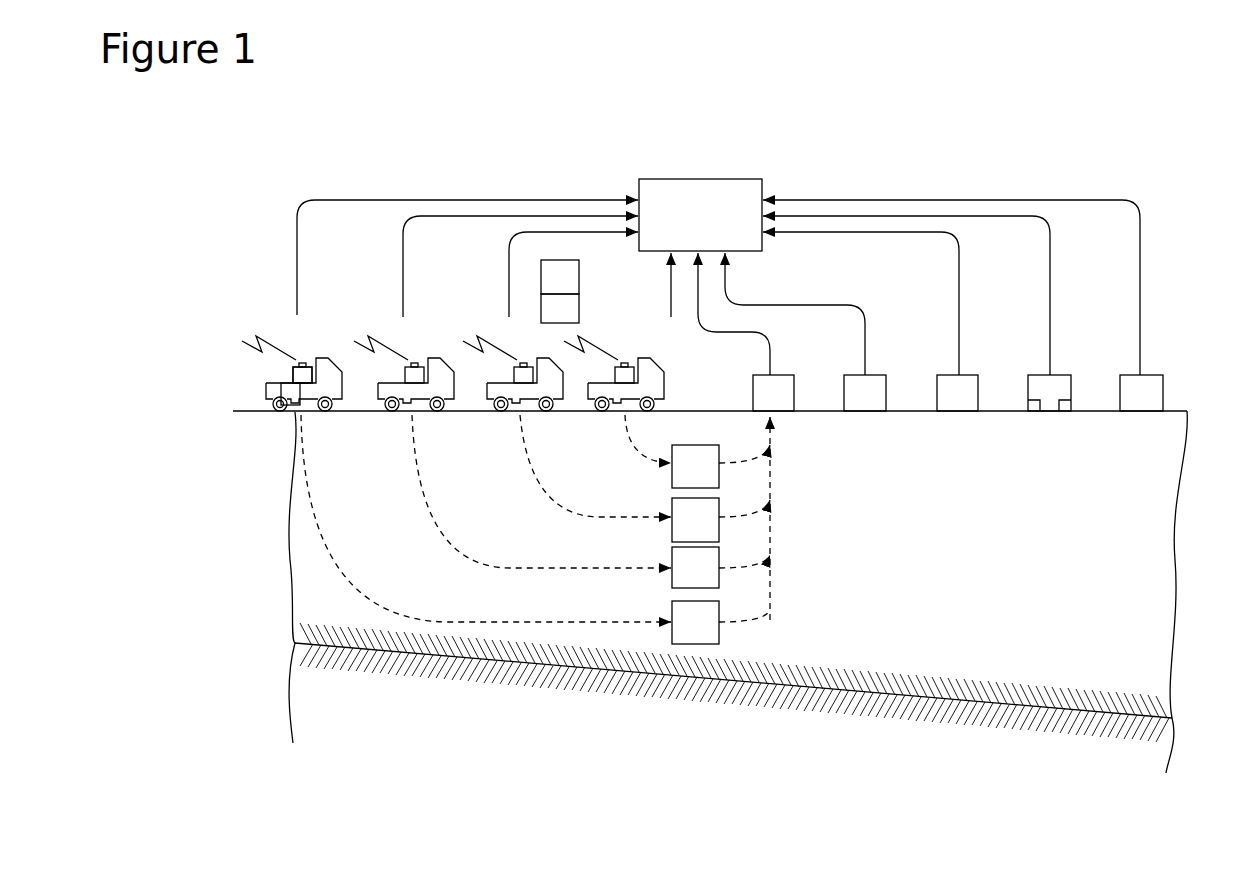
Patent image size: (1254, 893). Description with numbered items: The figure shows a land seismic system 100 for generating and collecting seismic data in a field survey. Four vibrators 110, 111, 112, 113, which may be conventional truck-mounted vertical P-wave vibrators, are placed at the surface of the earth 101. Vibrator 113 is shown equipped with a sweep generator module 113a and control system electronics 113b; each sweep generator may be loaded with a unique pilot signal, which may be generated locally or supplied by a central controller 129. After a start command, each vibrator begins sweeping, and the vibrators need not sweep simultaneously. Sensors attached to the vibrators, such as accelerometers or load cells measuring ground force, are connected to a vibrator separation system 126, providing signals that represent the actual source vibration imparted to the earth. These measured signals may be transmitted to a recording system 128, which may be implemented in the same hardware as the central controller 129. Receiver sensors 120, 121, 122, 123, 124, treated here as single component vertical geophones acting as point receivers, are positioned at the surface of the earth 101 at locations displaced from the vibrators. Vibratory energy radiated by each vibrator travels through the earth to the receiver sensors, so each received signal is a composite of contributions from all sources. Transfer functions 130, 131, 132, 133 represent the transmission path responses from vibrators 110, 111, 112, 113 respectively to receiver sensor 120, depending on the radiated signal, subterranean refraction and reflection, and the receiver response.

The land seismic system 100 is at (727, 131).
The surface of the earth 101 is at (1169, 409).
The vibrator 110 is at (640, 366).
The vibrator 111 is at (540, 366).
The vibrator 112 is at (430, 366).
The vibrator 113 is at (317, 366).
The sweep generator module 113a is at (267, 390).
The control system electronics 113b is at (290, 413).
The receiver sensor 120 is at (763, 374).
The receiver sensor 121 is at (858, 374).
The receiver sensor 122 is at (953, 374).
The receiver sensor 123 is at (1045, 374).
The receiver sensor 124 is at (1135, 374).
The vibrator separation system 126 is at (745, 253).
The recording system 128 is at (579, 276).
The central controller 129 is at (579, 312).
The transfer function 130 is at (712, 476).
The transfer function 131 is at (712, 530).
The transfer function 132 is at (712, 578).
The transfer function 133 is at (712, 632).